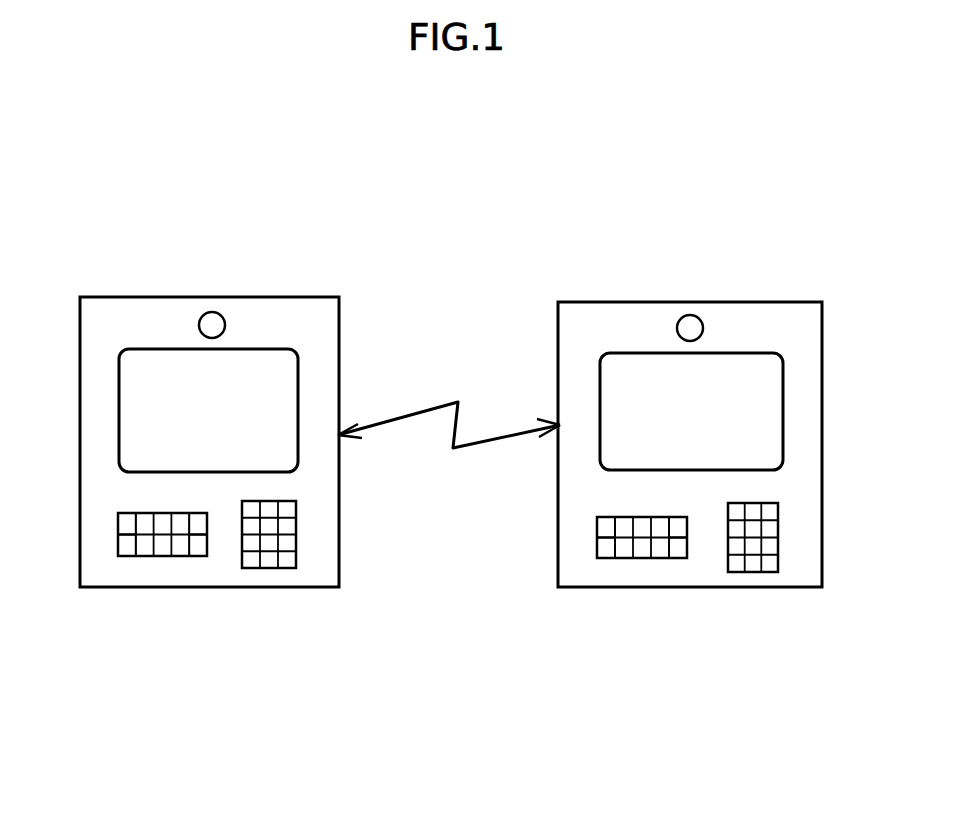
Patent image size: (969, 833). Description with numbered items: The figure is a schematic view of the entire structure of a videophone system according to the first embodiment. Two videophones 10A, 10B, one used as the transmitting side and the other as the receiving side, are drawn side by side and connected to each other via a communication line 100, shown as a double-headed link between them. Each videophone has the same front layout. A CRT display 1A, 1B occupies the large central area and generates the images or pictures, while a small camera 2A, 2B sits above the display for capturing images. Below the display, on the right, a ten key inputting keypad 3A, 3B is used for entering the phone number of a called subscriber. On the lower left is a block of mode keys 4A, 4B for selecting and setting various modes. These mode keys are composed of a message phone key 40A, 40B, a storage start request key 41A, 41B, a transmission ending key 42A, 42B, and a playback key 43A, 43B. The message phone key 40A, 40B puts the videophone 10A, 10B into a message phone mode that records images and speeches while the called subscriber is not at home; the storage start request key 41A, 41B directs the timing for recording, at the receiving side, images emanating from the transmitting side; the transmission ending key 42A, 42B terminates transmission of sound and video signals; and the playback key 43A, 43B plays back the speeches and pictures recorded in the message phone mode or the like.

The videophone 10A is at (337, 575).
The CRT display 1A is at (280, 362).
The camera 2A is at (213, 323).
The ten key inputting keypad 3A is at (287, 572).
The mode keys 4A is at (147, 558).
The message phone key 40A is at (203, 527).
The storage start request key 41A is at (202, 555).
The transmission ending key 42A is at (127, 550).
The playback key 43A is at (127, 523).
The videophone 10B is at (822, 580).
The CRT display 1B is at (765, 365).
The camera 2B is at (691, 322).
The ten key inputting keypad 3B is at (780, 573).
The mode keys 4B is at (625, 562).
The message phone key 40B is at (682, 530).
The storage start request key 41B is at (680, 562).
The transmission ending key 42B is at (603, 553).
The playback key 43B is at (603, 531).
The communication line 100 is at (423, 410).